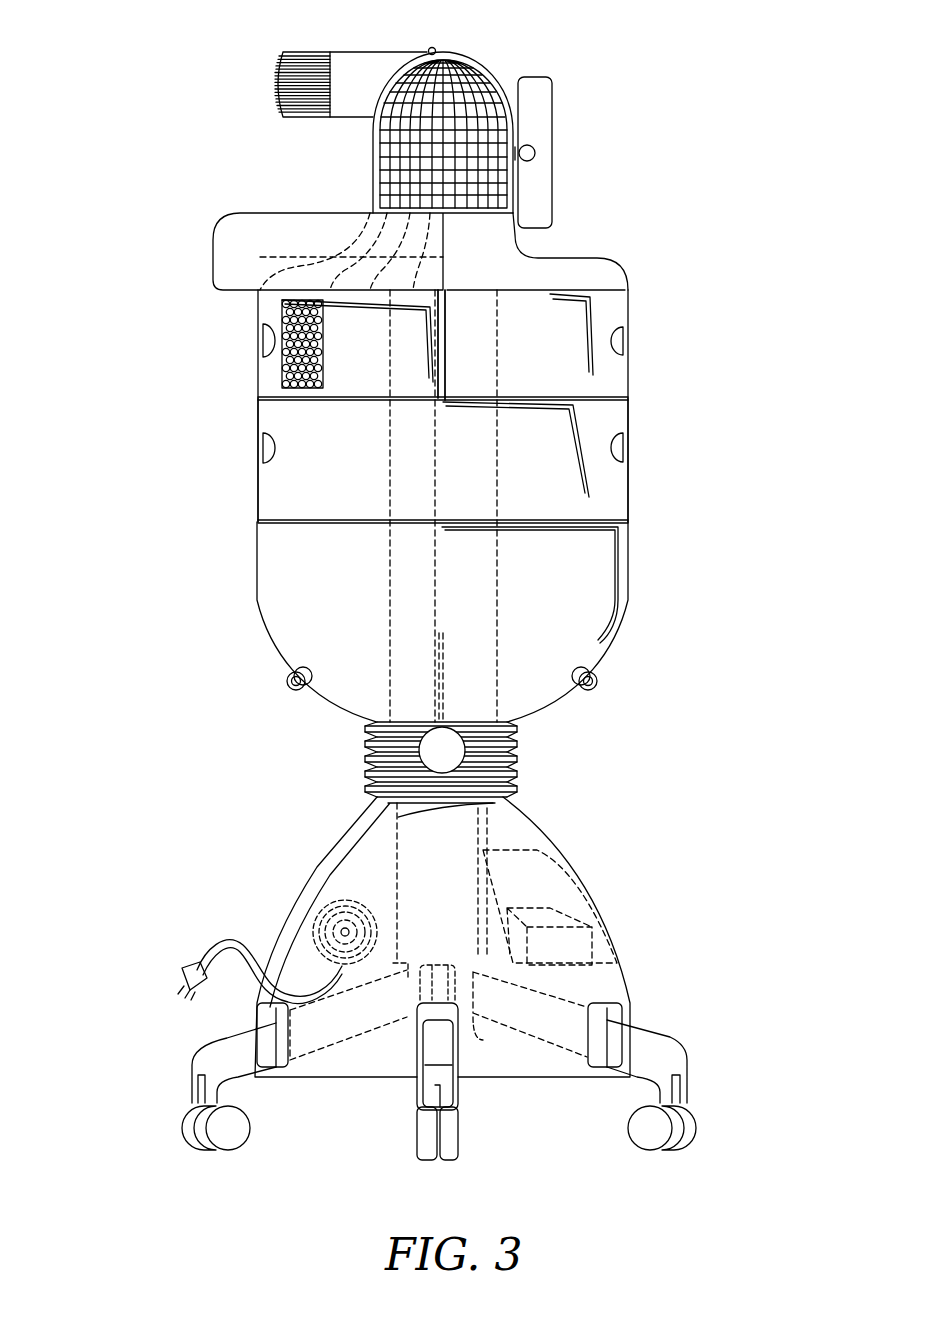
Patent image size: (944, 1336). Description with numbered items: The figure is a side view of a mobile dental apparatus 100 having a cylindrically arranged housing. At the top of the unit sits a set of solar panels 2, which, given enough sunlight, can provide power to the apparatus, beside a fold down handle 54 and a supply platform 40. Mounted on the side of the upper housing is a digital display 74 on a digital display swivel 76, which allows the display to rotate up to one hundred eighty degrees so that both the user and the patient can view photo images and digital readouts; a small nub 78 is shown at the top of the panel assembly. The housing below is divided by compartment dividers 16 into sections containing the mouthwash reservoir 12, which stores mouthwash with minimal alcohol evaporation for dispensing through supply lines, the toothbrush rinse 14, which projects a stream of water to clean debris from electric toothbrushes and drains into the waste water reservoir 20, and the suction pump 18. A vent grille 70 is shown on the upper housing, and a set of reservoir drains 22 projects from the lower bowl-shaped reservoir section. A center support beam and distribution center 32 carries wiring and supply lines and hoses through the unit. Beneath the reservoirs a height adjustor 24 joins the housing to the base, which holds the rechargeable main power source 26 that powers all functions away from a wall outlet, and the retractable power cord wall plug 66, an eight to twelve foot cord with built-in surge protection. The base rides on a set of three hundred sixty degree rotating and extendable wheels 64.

The set of solar panels 2 is at (463, 62).
The mouthwash reservoir 12 is at (498, 337).
The toothbrush rinse 14 is at (490, 367).
The compartment dividers 16 is at (440, 383).
The suction pump 18 is at (283, 488).
The waste water reservoir 20 is at (597, 600).
The set of reservoir drains 22 is at (290, 686).
The height adjustor 24 is at (460, 748).
The rechargeable main power source 26 is at (583, 942).
The center support beam and distribution center 32 is at (440, 458).
The supply platform 40 is at (240, 234).
The fold down handle 54 is at (353, 62).
The set of 360 degree rotating and extendable wheels 64 is at (172, 1128).
The retractable power cord wall plug 66 is at (208, 960).
The vent grille 70 is at (355, 373).
The digital display 74 is at (532, 88).
The digital display swivel 76 is at (535, 152).
The nub 78 is at (432, 47).
The apparatus 100 is at (705, 140).